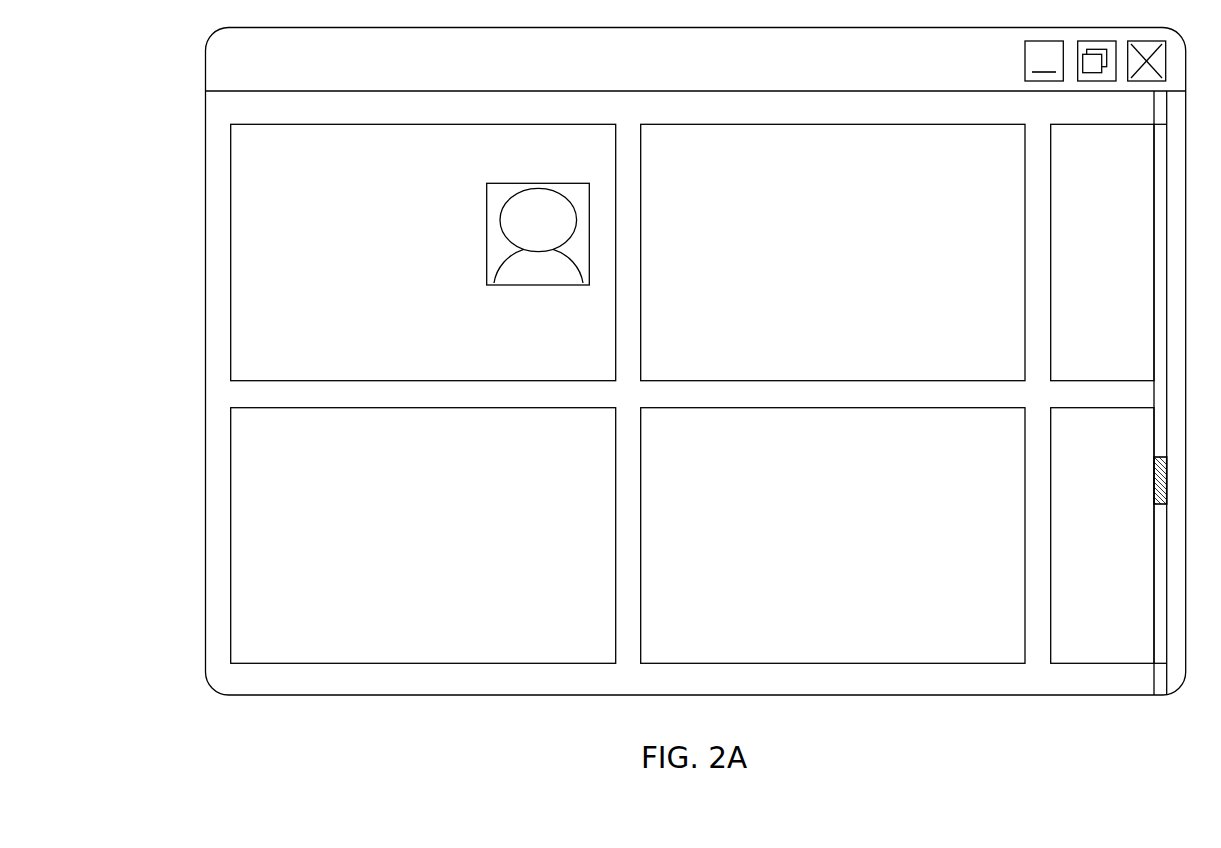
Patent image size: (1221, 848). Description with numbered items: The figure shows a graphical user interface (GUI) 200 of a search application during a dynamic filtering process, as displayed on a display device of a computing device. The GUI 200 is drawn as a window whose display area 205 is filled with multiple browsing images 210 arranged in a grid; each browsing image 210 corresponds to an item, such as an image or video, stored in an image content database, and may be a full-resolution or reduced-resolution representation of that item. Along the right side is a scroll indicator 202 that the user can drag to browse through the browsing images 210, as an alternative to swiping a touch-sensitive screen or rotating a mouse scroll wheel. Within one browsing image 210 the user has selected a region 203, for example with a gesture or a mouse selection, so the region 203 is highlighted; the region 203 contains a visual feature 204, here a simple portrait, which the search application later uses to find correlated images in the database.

The graphical user interface 200 is at (727, 55).
The scroll indicator 202 is at (1153, 477).
The region 203 is at (504, 259).
The visual feature 204 is at (500, 265).
The display area 205 is at (231, 265).
The browsing images 210 is at (405, 164).